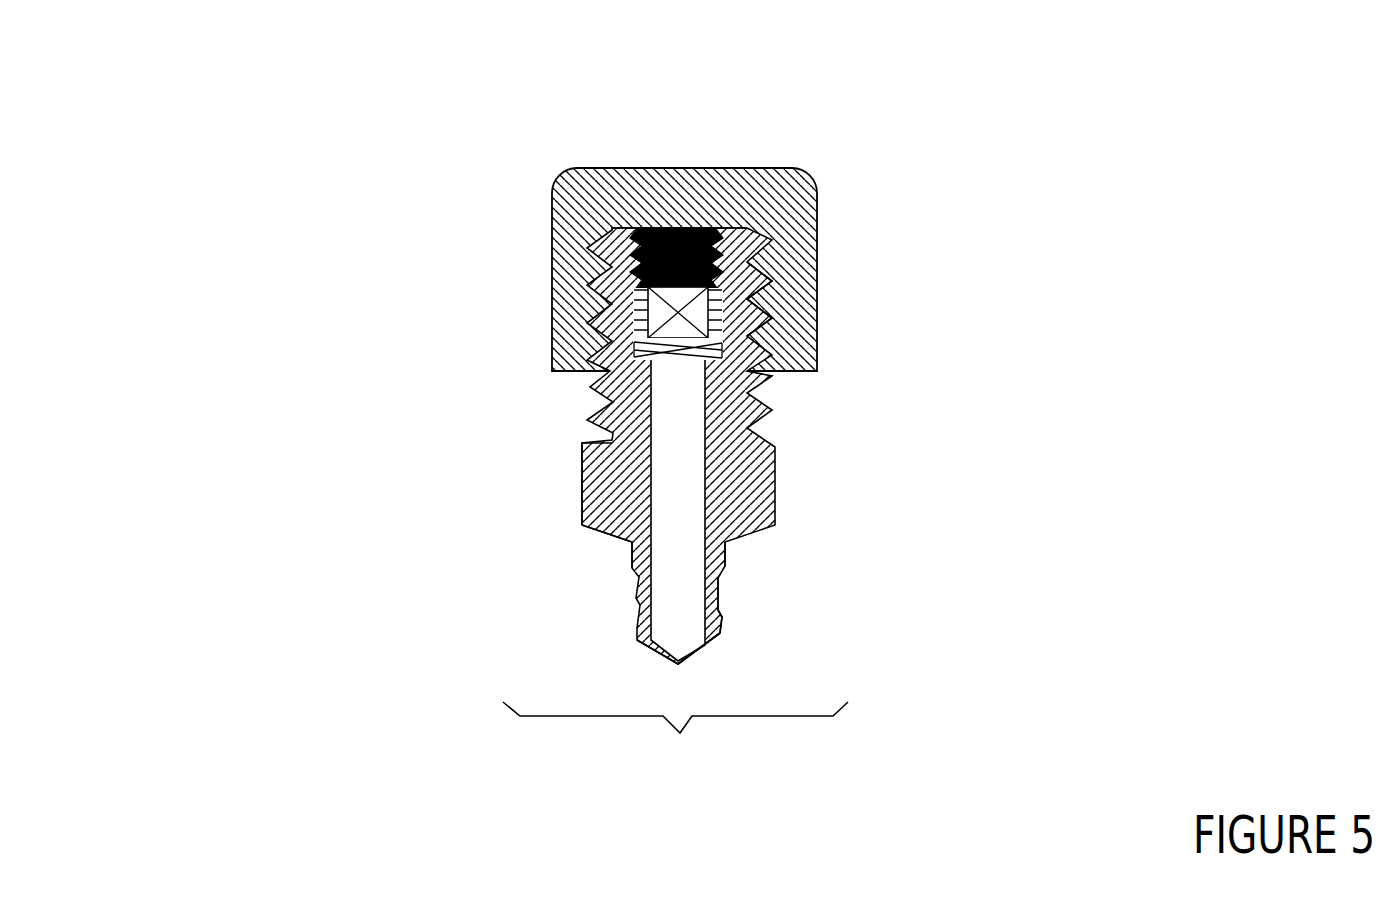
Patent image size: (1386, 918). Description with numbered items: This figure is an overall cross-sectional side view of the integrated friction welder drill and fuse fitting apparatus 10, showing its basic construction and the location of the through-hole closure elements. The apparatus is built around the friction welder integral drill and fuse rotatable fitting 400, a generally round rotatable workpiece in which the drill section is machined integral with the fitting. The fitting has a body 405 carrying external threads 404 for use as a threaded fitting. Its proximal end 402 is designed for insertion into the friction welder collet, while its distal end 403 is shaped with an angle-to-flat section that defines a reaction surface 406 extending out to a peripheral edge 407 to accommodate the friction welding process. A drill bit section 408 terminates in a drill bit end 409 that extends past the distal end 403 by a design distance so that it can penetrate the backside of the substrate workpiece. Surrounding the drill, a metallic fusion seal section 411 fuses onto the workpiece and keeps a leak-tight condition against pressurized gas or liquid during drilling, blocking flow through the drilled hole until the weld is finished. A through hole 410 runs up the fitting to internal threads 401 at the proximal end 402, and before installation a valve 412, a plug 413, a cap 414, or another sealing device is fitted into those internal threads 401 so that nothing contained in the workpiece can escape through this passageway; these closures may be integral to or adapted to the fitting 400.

The friction welder drill and fuse fitting apparatus 10 is at (680, 733).
The friction welder integral drill and fuse rotatable fitting 400 is at (742, 462).
The friction welder integral drill and fuse rotatable fitting internal threads 401 is at (636, 273).
The friction welder integral drill and fuse rotatable fitting proximal end 402 is at (584, 168).
The friction welder integral drill and fuse rotatable fitting distal end 403 is at (678, 664).
The friction welder integral drill and fuse rotatable fitting external threads 404 is at (723, 273).
The friction welder integral drill and fuse rotatable fitting body 405 is at (582, 475).
The friction welder integral drill and fuse rotatable fitting reaction surface 406 is at (607, 534).
The friction welder integral drill and fuse rotatable fitting peripheral edge 407 is at (582, 522).
The friction welder integral drill and fuse rotatable fitting drill bit section 408 is at (718, 587).
The friction welder integral drill and fuse rotatable fitting drill bit end 409 is at (698, 647).
The friction welder integral drill and fuse rotatable fitting through hole 410 is at (692, 405).
The friction welder integral drill and fuse rotatable fitting fusion seal section 411 is at (725, 553).
The friction welder integral drill and fuse rotatable fitting valve 412 is at (648, 315).
The friction welder integral drill and fuse rotatable fitting plug 413 is at (673, 228).
The friction welder integral drill and fuse rotatable fitting cap 414 is at (720, 168).